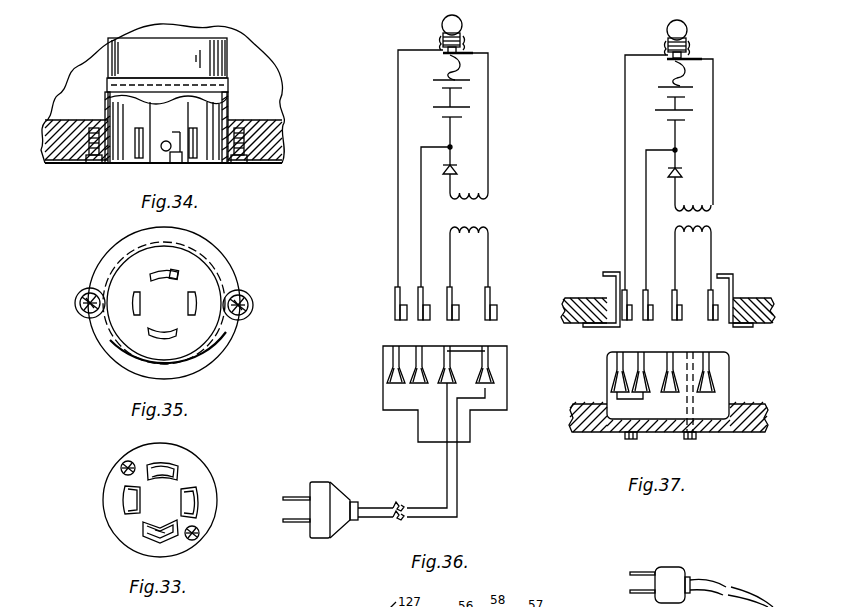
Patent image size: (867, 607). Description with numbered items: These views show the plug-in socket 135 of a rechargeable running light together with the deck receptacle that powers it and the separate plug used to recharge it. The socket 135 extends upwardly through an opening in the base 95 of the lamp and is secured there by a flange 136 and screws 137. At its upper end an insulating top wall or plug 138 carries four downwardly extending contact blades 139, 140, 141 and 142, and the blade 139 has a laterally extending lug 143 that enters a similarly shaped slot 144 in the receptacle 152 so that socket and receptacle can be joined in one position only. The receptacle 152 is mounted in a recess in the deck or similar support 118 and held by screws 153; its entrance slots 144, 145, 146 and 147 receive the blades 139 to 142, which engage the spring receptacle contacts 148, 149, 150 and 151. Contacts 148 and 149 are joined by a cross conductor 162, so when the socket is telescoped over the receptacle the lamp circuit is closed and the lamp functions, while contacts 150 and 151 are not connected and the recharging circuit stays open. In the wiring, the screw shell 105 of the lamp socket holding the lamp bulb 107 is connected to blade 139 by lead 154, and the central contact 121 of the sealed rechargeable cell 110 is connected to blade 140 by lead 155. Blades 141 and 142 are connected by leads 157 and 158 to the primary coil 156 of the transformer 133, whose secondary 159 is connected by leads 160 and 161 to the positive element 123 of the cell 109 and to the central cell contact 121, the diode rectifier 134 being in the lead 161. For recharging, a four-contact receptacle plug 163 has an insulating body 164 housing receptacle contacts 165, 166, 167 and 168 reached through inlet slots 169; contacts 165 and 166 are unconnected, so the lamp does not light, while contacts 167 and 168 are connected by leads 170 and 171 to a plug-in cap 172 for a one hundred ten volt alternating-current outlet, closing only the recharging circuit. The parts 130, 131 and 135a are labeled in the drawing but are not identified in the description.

In FIG. 34, the base 95 is at (278, 147).
In FIG. 37, the base 95 is at (752, 303).
In FIG. 36, the screw shell 105 is at (438, 40).
In FIG. 37, the screw shell 105 is at (664, 44).
In FIG. 36, the lamp bulb 107 is at (463, 24).
In FIG. 37, the lamp bulb 107 is at (689, 30).
In FIG. 36, the sealed rechargeable cell 109 is at (468, 87).
In FIG. 37, the sealed rechargeable cell 109 is at (690, 91).
In FIG. 36, the sealed rechargeable cell 110 is at (462, 112).
In FIG. 37, the sealed rechargeable cell 110 is at (690, 118).
In FIG. 37, the deck or similar support 118 is at (745, 428).
In FIG. 36, the central contact 121 is at (452, 122).
In FIG. 37, the central contact 121 is at (675, 150).
In FIG. 36, the positive element 123 is at (466, 70).
In FIG. 37, the positive element 123 is at (690, 76).
In FIG. 37, the cord 130 is at (758, 590).
In FIG. 37, the plug 131 is at (665, 568).
In FIG. 36, the transformer 133 is at (484, 214).
In FIG. 37, the transformer 133 is at (706, 222).
In FIG. 36, the diode rectifier 134 is at (460, 171).
In FIG. 37, the diode rectifier 134 is at (690, 175).
In FIG. 34, the plug-in socket 135 is at (233, 110).
In FIG. 35, the plug-in socket 135 is at (112, 358).
In FIG. 36, the plug-in socket 135 is at (382, 290).
In FIG. 37, the plug-in socket 135 is at (600, 272).
In FIG. 34, the housing liner 135a is at (105, 128).
In FIG. 35, the housing liner 135a is at (203, 353).
In FIG. 35, the flange 136 is at (220, 267).
In FIG. 34, the screws 137 is at (91, 165).
In FIG. 35, the screws 137 is at (243, 293).
In FIG. 34, the insulating top wall or plug 138 is at (222, 63).
In FIG. 34, the contact blade 139 is at (164, 160).
In FIG. 35, the contact blade 139 is at (158, 266).
In FIG. 36, the contact blade 139 is at (397, 322).
In FIG. 37, the contact blade 139 is at (622, 318).
In FIG. 34, the contact blade 140 is at (137, 160).
In FIG. 35, the contact blade 140 is at (132, 308).
In FIG. 36, the contact blade 140 is at (419, 311).
In FIG. 37, the contact blade 140 is at (643, 318).
In FIG. 35, the contact blade 141 is at (163, 337).
In FIG. 36, the contact blade 141 is at (453, 311).
In FIG. 37, the contact blade 141 is at (672, 318).
In FIG. 34, the contact blade 142 is at (195, 160).
In FIG. 35, the contact blade 142 is at (195, 308).
In FIG. 36, the contact blade 142 is at (489, 311).
In FIG. 37, the contact blade 142 is at (708, 318).
In FIG. 34, the laterally extending lug 143 is at (180, 163).
In FIG. 35, the laterally extending lug 143 is at (173, 270).
In FIG. 33, the entrance slot 144 is at (150, 534).
In FIG. 33, the entrance slot 145 is at (131, 505).
In FIG. 33, the entrance slot 146 is at (166, 467).
In FIG. 33, the entrance slot 147 is at (192, 503).
In FIG. 33, the spring receptacle contact 148 is at (160, 538).
In FIG. 37, the spring receptacle contact 148 is at (610, 379).
In FIG. 37, the spring receptacle contact 149 is at (650, 394).
In FIG. 37, the spring receptacle contact 150 is at (668, 379).
In FIG. 37, the spring receptacle contact 151 is at (716, 392).
In FIG. 37, the receptacle plug 152 is at (730, 366).
In FIG. 33, the screws 153 is at (121, 466).
In FIG. 37, the screws 153 is at (688, 442).
In FIG. 36, the lead 154 is at (397, 145).
In FIG. 37, the lead 154 is at (621, 151).
In FIG. 36, the lead 155 is at (420, 227).
In FIG. 37, the lead 155 is at (644, 219).
In FIG. 36, the primary coil 156 is at (470, 238).
In FIG. 37, the primary coil 156 is at (694, 240).
In FIG. 36, the lead 157 is at (451, 263).
In FIG. 37, the lead 157 is at (676, 265).
In FIG. 36, the lead 158 is at (492, 272).
In FIG. 37, the lead 158 is at (713, 261).
In FIG. 36, the secondary 159 is at (474, 197).
In FIG. 37, the secondary 159 is at (696, 208).
In FIG. 36, the lead 160 is at (494, 137).
In FIG. 37, the lead 160 is at (714, 145).
In FIG. 36, the lead 161 is at (445, 190).
In FIG. 37, the lead 161 is at (668, 178).
In FIG. 37, the cross conductor 162 is at (629, 385).
In FIG. 36, the four-contact receptacle plug 163 is at (395, 413).
In FIG. 36, the insulating body 164 is at (382, 397).
In FIG. 36, the receptacle contact 165 is at (387, 376).
In FIG. 36, the receptacle contact 166 is at (415, 375).
In FIG. 36, the receptacle contact 167 is at (453, 384).
In FIG. 36, the receptacle contact 168 is at (496, 380).
In FIG. 36, the inlet slots 169 is at (428, 349).
In FIG. 36, the lead 170 is at (442, 478).
In FIG. 36, the lead 171 is at (459, 478).
In FIG. 36, the plug-in cap 172 is at (317, 480).